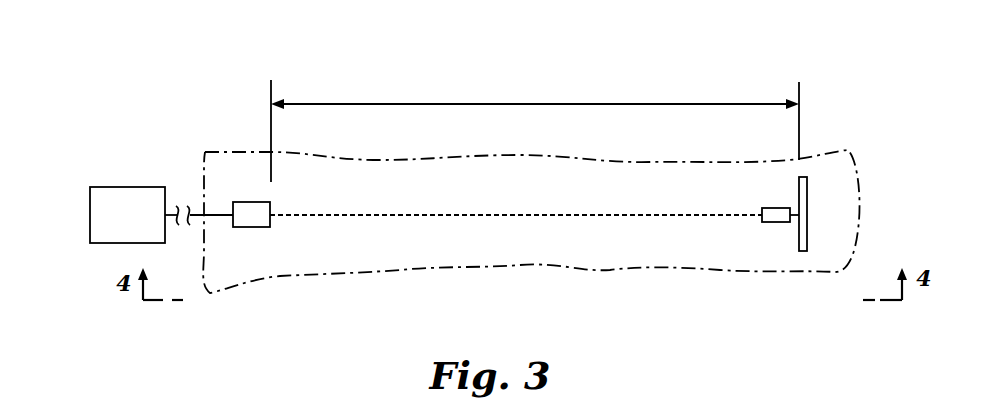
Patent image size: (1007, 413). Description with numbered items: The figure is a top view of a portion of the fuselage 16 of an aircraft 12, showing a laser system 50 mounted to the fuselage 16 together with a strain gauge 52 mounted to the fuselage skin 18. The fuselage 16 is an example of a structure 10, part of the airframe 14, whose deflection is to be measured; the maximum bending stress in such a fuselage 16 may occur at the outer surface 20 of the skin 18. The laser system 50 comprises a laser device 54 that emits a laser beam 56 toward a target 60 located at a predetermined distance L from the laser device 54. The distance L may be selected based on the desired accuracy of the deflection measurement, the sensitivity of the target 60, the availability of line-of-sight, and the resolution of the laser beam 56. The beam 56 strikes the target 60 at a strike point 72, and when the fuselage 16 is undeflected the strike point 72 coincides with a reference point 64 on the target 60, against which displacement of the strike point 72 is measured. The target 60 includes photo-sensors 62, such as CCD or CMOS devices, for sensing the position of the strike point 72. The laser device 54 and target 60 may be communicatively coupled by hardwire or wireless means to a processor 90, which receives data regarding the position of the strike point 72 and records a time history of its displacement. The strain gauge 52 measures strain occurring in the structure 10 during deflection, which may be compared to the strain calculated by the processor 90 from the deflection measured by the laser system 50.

The structure 10 is at (478, 156).
The aircraft 12 is at (192, 72).
The airframe 14 is at (388, 160).
The fuselage 16 is at (618, 271).
The fuselage skin 18 is at (598, 253).
The outer surface 20 is at (675, 172).
The laser system 50 is at (244, 262).
The strain gauge 52 is at (770, 208).
The laser device 54 is at (247, 202).
The laser beam 56 is at (397, 216).
The target 60 is at (810, 183).
The photo-sensors 62 is at (797, 188).
The reference point 64 is at (799, 219).
The strike point 72 is at (790, 219).
The processor 90 is at (128, 187).
The predetermined distance L is at (519, 103).